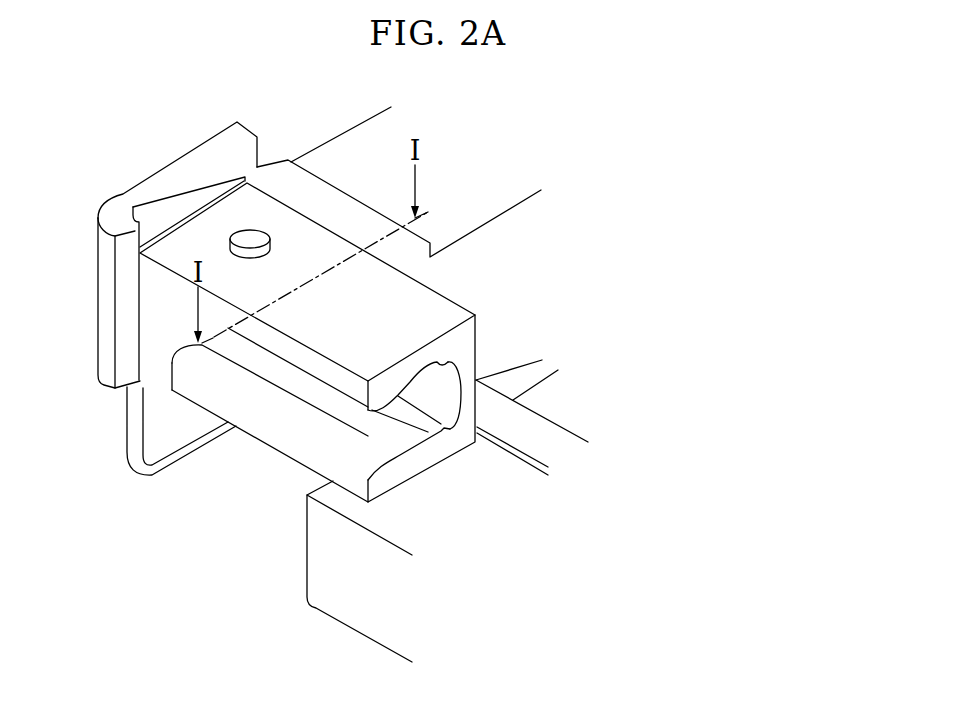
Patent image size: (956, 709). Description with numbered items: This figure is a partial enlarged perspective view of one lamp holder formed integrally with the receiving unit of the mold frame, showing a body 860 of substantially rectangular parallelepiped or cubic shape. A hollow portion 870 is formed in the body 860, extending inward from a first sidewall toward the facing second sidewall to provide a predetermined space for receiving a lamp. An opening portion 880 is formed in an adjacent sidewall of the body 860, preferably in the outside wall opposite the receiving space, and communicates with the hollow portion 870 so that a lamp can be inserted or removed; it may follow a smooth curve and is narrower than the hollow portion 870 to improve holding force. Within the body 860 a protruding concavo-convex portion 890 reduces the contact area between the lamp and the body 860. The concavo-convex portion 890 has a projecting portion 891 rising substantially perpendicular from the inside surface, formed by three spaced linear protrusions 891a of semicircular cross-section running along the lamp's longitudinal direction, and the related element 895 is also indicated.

The body 860 is at (457, 327).
The hollow portion 870 is at (433, 405).
The opening portion 880 is at (313, 402).
The concavo-convex portion 890 is at (549, 512).
The projecting portion 891 is at (610, 565).
The linear protrusions 891a is at (447, 429).
The support plate 895 is at (568, 614).